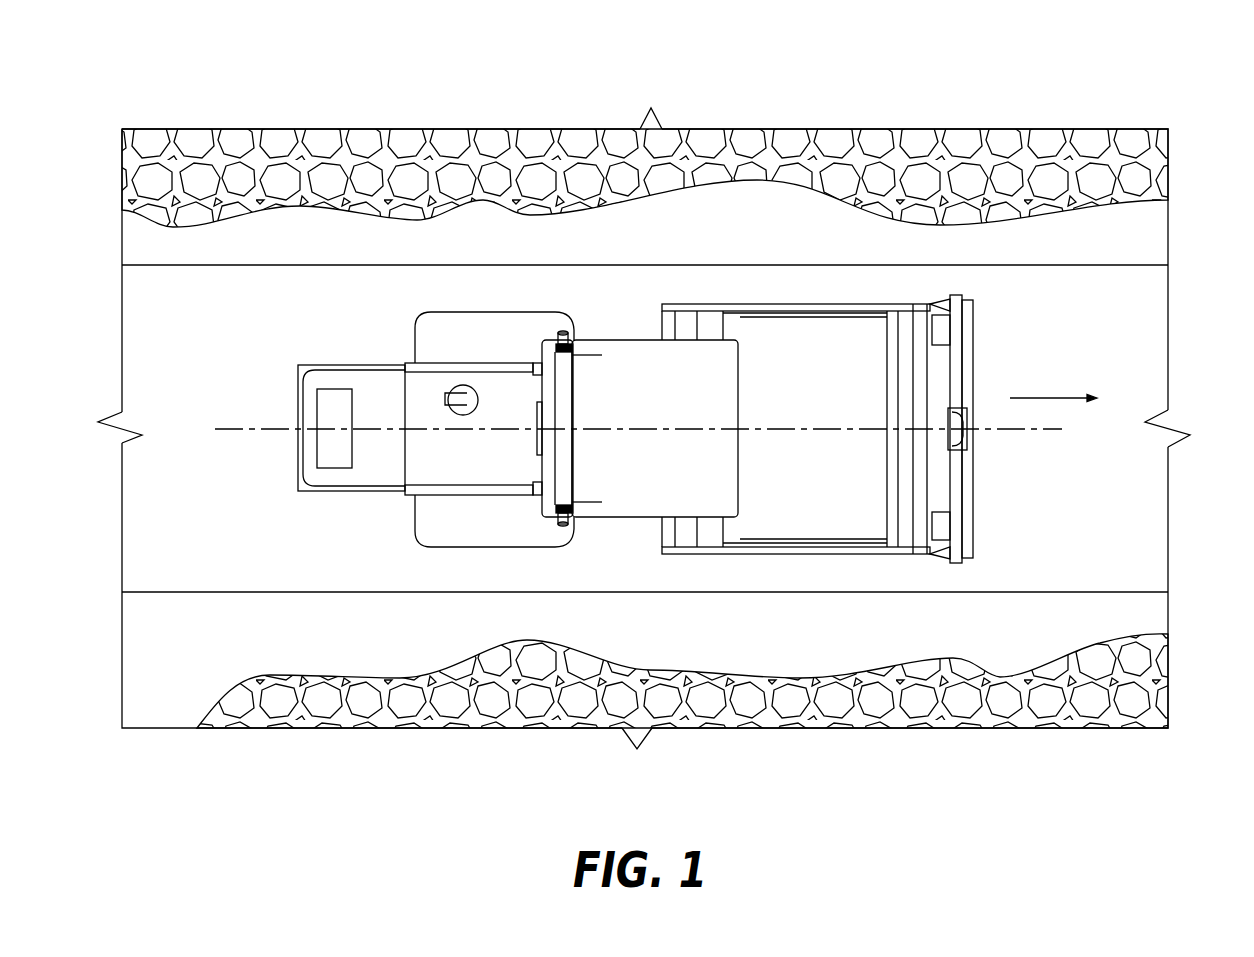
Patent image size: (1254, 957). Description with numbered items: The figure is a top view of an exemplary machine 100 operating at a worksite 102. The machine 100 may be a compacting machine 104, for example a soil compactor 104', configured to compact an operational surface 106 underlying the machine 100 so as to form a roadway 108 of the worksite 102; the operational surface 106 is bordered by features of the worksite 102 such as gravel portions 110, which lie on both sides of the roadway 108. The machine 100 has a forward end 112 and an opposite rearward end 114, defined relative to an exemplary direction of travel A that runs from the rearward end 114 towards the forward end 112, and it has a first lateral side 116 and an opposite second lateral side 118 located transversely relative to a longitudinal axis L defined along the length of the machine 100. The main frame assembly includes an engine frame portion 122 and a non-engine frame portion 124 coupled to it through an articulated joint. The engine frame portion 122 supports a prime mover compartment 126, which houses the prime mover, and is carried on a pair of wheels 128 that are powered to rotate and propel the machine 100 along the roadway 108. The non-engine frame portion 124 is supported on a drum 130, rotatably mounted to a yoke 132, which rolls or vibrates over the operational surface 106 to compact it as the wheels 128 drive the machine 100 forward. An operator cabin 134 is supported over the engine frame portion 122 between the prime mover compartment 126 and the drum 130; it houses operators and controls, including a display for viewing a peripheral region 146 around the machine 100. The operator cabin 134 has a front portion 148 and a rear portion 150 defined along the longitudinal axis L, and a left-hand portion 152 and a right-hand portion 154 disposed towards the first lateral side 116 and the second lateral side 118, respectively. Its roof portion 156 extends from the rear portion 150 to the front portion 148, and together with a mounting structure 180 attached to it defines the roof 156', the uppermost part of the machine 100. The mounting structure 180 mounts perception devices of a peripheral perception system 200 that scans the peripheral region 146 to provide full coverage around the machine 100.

The machine 100 is at (737, 566).
The worksite 102 is at (1113, 246).
The compacting machine 104 is at (702, 652).
The soil compactor 104' is at (659, 650).
The operational surface 106 is at (1101, 307).
The roadway 108 is at (1117, 593).
The gravel portions 110 is at (957, 162).
The forward end 112 is at (985, 505).
The rearward end 114 is at (288, 455).
The first lateral side 116 is at (632, 545).
The second lateral side 118 is at (666, 292).
The engine frame portion 122 is at (383, 383).
The non-engine frame portion 124 is at (688, 323).
The prime mover compartment 126 is at (333, 380).
The wheels 128 is at (430, 343).
The drum 130 is at (828, 520).
The yoke 132 is at (853, 303).
The operator cabin 134 is at (599, 336).
The peripheral region 146 is at (798, 230).
The front portion 148 is at (742, 372).
The rear portion 150 is at (545, 527).
The left-hand portion 152 is at (648, 527).
The right-hand portion 154 is at (617, 340).
The roof portion 156 is at (631, 379).
The roof 156' is at (631, 480).
The mounting structure 180 is at (556, 409).
The peripheral perception system 200 is at (546, 330).
The longitudinal axis L is at (248, 428).
The direction of travel A is at (1036, 396).